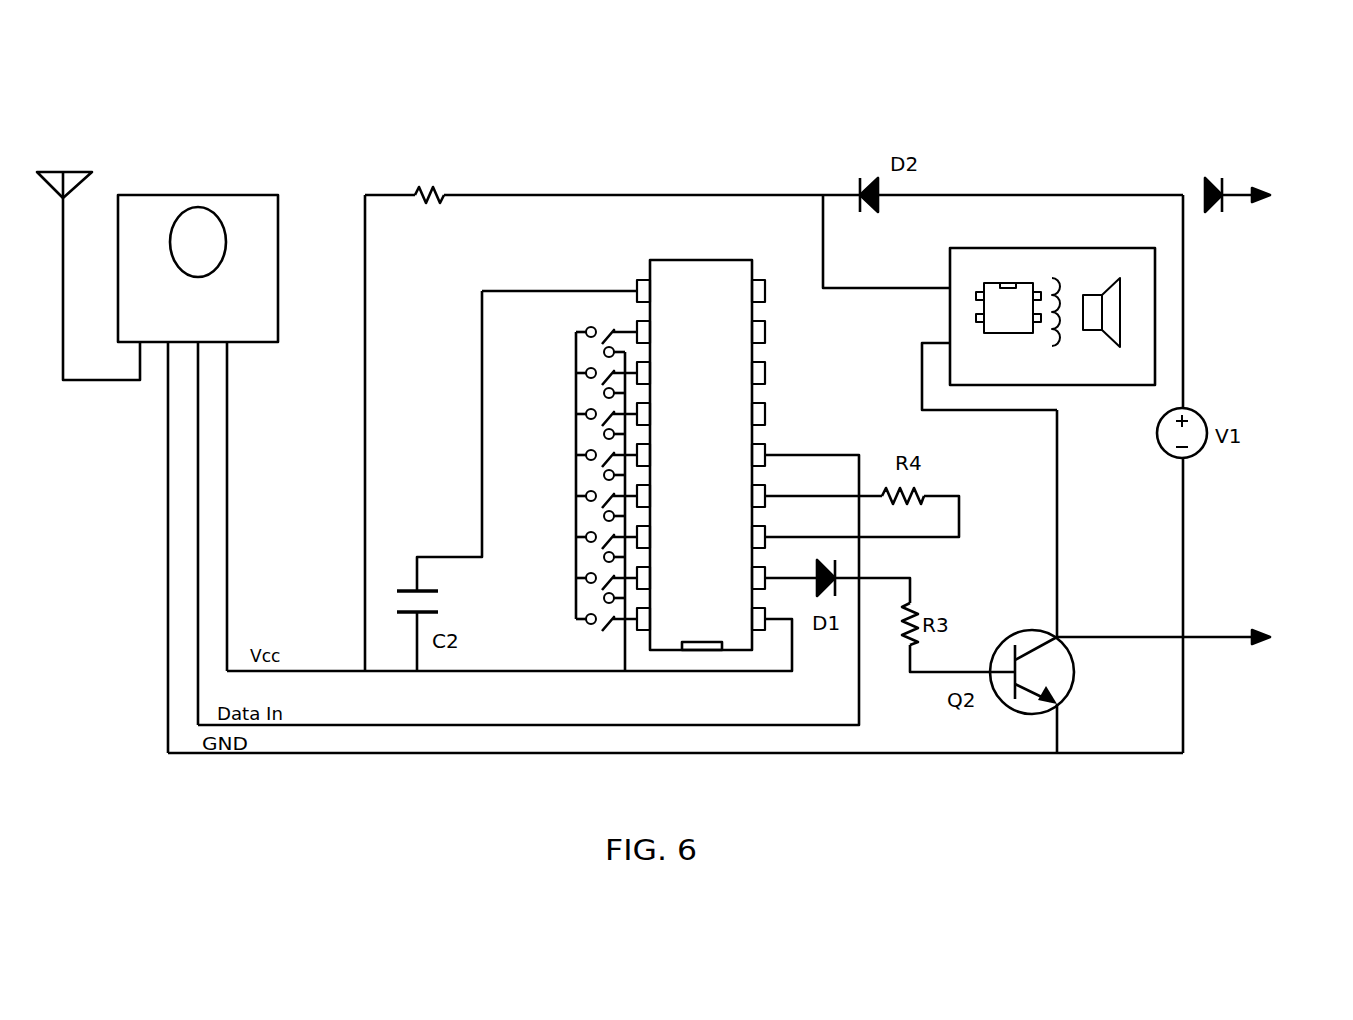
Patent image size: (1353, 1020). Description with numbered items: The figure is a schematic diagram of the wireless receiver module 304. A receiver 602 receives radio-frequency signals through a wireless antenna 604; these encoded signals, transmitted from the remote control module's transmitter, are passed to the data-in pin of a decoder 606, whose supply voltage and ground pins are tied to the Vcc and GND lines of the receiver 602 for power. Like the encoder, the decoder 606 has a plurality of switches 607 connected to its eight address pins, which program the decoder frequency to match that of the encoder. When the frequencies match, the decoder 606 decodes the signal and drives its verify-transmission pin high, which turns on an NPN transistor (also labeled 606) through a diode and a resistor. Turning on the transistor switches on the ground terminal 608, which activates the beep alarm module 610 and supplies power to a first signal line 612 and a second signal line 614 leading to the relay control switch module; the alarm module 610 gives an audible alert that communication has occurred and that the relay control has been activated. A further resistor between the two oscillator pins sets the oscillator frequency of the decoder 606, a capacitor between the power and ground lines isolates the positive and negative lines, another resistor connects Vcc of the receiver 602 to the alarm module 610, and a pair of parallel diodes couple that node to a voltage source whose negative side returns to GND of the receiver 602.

The wireless receiver module 304 is at (856, 142).
The receiver 602 is at (197, 193).
The wireless antenna 604 is at (58, 172).
The decoder 606 is at (660, 272).
The plurality of switches 607 is at (553, 418).
The ground terminal 608 is at (452, 753).
The alarm module 610 is at (1083, 387).
The first signal line 612 is at (1255, 193).
The second signal line 614 is at (1232, 637).